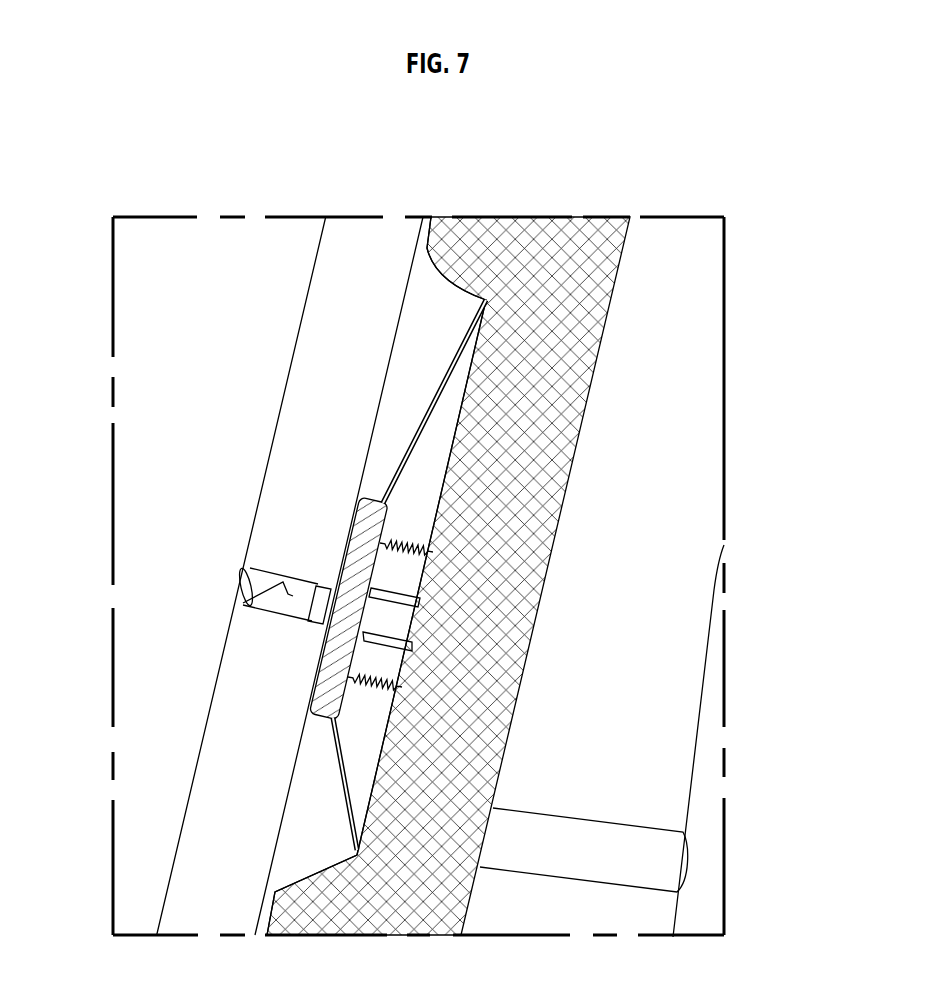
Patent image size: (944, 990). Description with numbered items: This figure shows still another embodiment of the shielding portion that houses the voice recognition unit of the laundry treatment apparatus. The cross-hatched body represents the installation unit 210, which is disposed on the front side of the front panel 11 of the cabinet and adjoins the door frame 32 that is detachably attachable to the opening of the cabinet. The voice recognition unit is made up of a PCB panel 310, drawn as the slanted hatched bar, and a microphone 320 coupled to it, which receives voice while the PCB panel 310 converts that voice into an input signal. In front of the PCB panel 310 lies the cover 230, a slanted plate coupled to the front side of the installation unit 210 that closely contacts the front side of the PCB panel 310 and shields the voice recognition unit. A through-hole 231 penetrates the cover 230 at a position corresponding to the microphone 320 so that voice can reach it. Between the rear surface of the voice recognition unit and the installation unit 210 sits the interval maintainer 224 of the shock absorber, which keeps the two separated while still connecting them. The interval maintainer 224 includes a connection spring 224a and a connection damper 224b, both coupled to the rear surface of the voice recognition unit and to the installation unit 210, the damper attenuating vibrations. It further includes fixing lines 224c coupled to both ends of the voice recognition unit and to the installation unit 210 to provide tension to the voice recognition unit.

The front panel 11 is at (675, 230).
The door frame 32 is at (538, 230).
The installation unit 210 is at (453, 273).
The cover 230 is at (372, 231).
The through-hole 231 is at (243, 604).
The PCB panel 310 is at (342, 667).
The microphone 320 is at (330, 607).
The interval maintainer 224 is at (610, 575).
The connection spring 224a is at (407, 538).
The connection damper 224b is at (363, 637).
The fixing line 224c is at (408, 462).